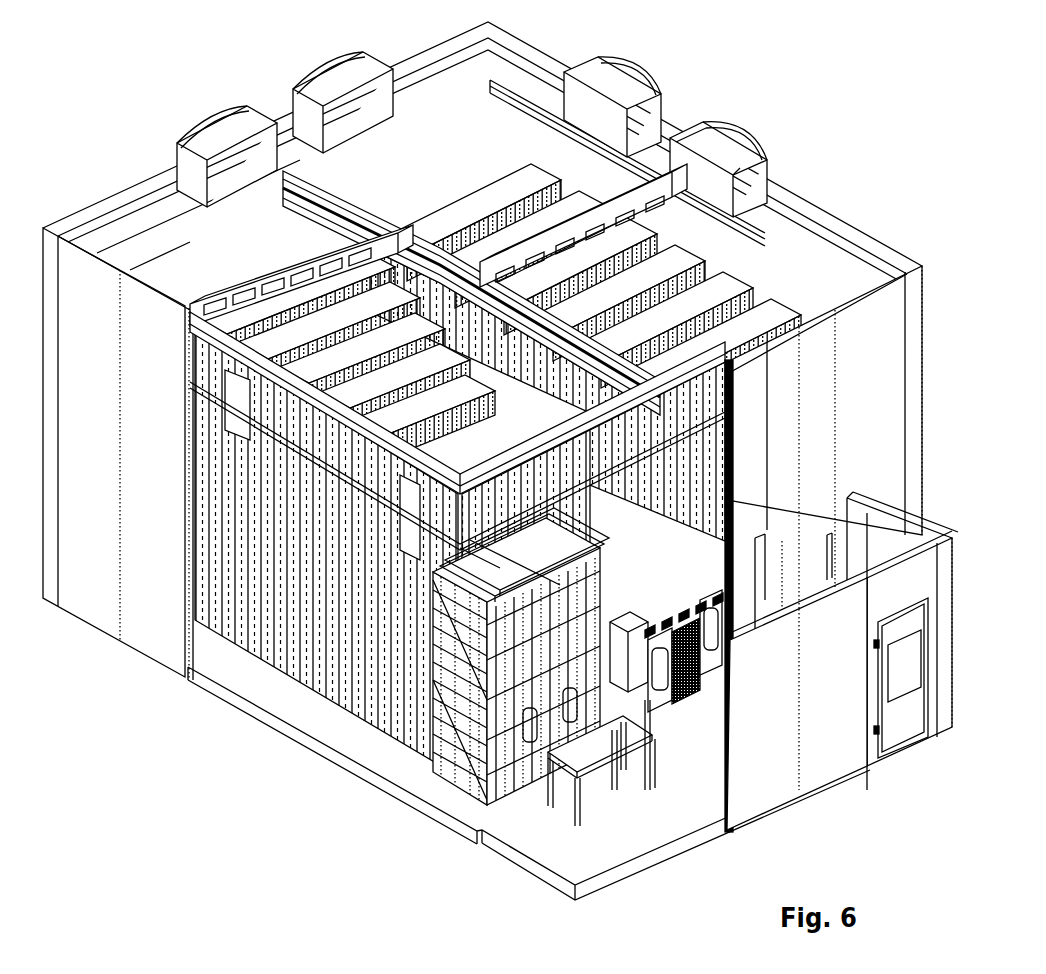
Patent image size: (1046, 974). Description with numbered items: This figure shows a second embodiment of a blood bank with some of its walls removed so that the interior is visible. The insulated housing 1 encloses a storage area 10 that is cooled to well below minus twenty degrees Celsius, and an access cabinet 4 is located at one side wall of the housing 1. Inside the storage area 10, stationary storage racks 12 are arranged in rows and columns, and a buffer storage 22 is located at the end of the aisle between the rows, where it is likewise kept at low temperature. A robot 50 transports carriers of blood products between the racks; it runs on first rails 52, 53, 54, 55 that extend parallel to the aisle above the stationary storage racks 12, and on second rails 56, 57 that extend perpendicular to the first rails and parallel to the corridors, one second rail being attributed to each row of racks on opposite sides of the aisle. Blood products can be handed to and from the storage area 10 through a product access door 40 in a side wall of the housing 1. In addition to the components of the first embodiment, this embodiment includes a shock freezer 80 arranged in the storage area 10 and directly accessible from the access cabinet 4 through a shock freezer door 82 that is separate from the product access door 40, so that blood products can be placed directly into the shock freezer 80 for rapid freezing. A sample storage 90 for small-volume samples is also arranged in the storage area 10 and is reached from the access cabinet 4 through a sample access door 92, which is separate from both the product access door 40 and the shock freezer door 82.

The housing 1 is at (835, 208).
The access cabinet 4 is at (812, 718).
The storage area 10 is at (150, 268).
The stationary storage racks 12 is at (527, 177).
The buffer storage 22 is at (703, 703).
The product access door 40 is at (730, 687).
The robot 50 is at (676, 212).
The first rail 52 is at (203, 316).
The first rail 53 is at (335, 178).
The first rail 54 is at (337, 176).
The first rail 55 is at (507, 90).
The second rail 56 is at (240, 283).
The second rail 57 is at (592, 192).
The shock freezer 80 is at (618, 700).
The shock freezer door 82 is at (660, 727).
The sample storage 90 is at (445, 748).
The sample access door 92 is at (525, 747).